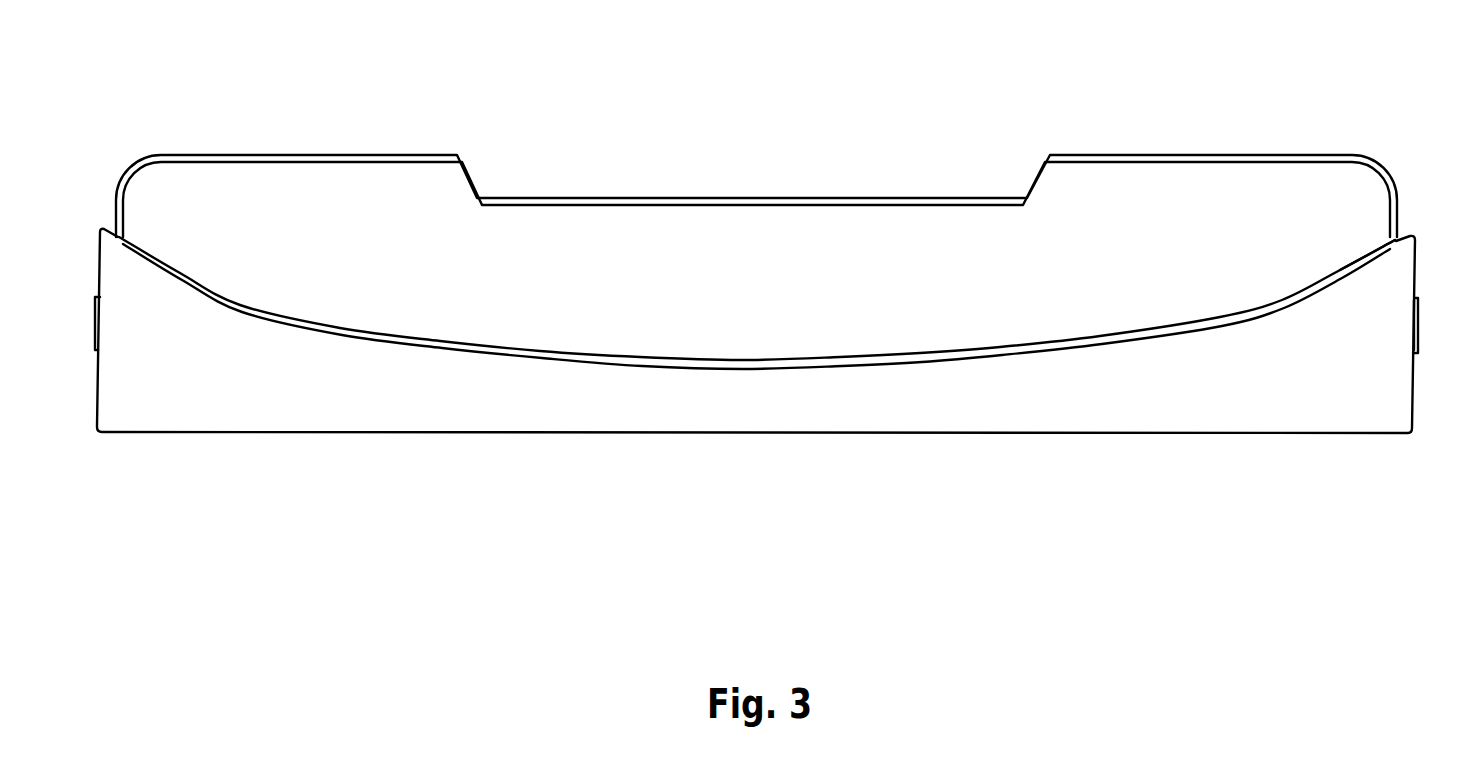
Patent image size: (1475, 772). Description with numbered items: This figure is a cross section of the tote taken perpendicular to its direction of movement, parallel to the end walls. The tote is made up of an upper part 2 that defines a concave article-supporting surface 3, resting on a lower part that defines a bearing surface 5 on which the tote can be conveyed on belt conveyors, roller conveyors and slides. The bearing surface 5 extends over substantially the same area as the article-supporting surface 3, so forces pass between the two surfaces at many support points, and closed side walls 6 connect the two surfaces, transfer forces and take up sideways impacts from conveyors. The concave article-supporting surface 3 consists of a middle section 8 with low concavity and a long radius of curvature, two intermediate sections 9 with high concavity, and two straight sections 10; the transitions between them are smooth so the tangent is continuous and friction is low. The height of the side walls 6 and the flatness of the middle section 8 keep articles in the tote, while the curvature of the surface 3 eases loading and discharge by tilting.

The upper part 2 is at (1382, 162).
The article-supporting surface 3 is at (720, 343).
The bearing surface 5 is at (985, 433).
The side walls 6 is at (1421, 266).
The middle section 8 is at (1107, 337).
The intermediate sections 9 is at (1282, 303).
The straight sections 10 is at (1358, 257).